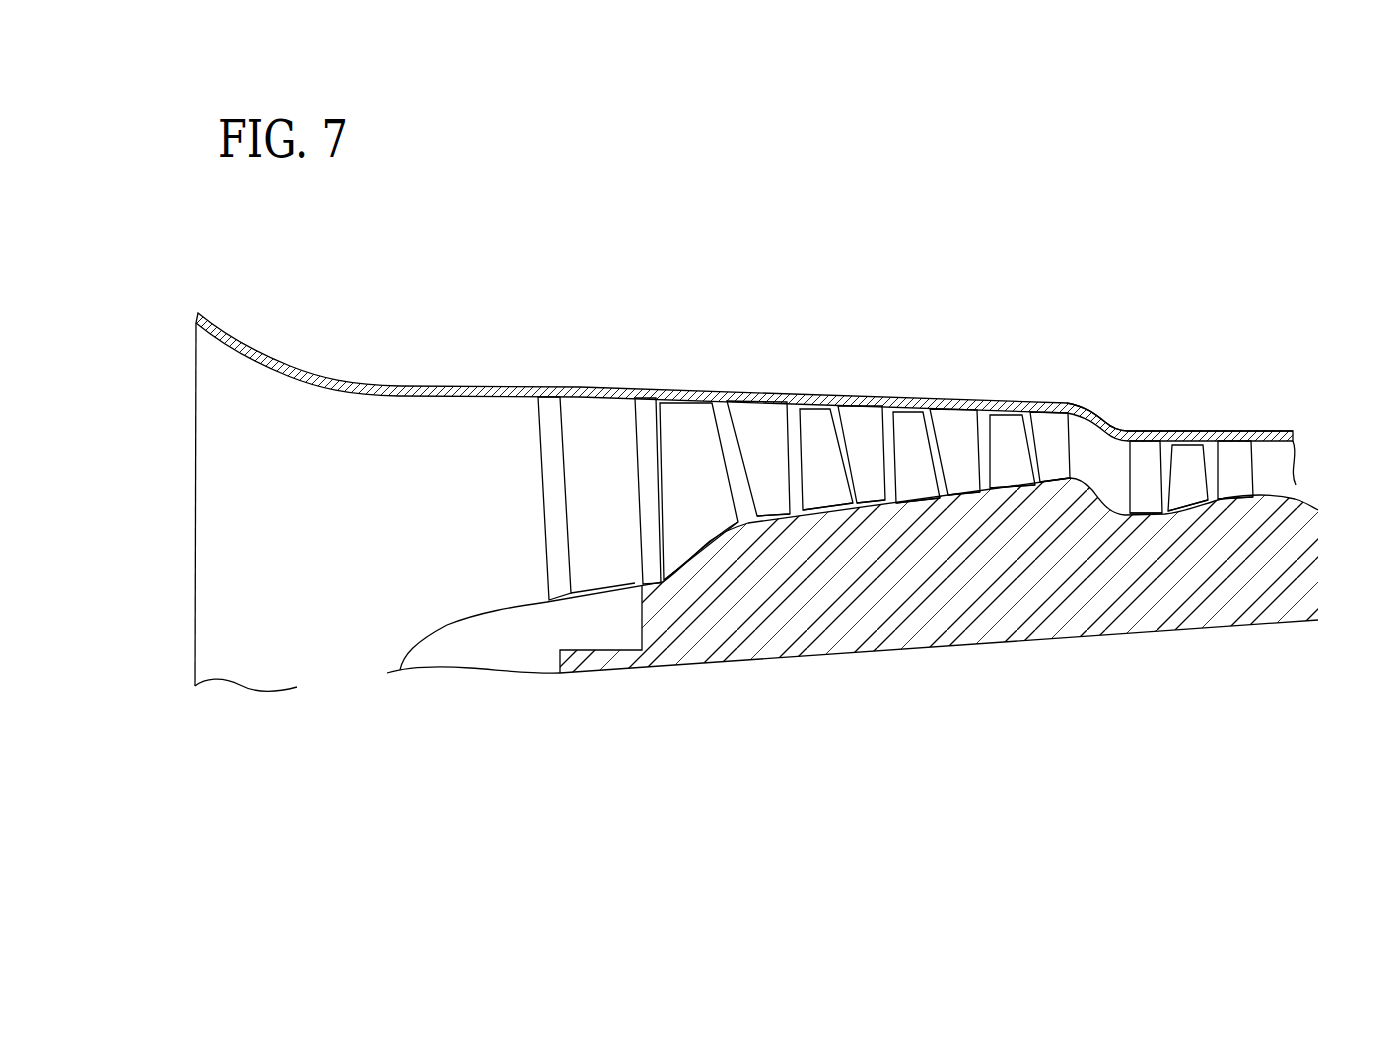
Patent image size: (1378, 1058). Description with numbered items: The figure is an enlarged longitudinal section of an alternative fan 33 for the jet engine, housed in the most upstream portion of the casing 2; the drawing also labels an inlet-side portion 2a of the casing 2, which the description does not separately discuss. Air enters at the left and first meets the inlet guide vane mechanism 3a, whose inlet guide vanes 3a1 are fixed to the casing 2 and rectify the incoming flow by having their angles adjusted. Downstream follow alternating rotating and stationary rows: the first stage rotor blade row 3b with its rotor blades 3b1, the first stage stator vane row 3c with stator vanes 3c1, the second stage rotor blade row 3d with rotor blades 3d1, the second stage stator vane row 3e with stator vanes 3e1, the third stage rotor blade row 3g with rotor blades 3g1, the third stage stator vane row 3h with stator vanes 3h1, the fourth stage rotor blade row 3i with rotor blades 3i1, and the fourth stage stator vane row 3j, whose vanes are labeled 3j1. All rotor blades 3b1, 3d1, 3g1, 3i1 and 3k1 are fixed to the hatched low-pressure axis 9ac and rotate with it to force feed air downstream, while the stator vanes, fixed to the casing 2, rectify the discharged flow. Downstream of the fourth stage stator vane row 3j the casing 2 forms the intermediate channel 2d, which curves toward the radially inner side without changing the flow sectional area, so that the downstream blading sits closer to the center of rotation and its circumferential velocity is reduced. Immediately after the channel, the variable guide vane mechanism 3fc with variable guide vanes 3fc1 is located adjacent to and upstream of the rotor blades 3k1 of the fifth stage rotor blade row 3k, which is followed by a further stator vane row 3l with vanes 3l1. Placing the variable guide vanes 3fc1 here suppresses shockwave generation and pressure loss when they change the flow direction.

The casing 2 is at (455, 387).
The inlet of casing 2a is at (194, 451).
The intermediate channel 2d is at (1092, 462).
The fan 33 is at (1142, 302).
The low-pressure axis 9ac is at (663, 643).
The inlet guide vane mechanism 3a is at (600, 380).
The inlet guide vanes 3a1 is at (603, 567).
The first stage rotor blade row 3b is at (688, 383).
The rotor blades 3b1 is at (702, 533).
The first stage stator vane row 3c is at (757, 385).
The stator vanes 3c1 is at (770, 500).
The second stage rotor blade row 3d is at (812, 387).
The rotor blades 3d1 is at (820, 500).
The second stage stator vane row 3e is at (862, 387).
The stator vanes 3e1 is at (872, 502).
The third stage rotor blade row 3g is at (908, 397).
The rotor blades 3g1 is at (917, 490).
The third stage stator vane row 3h is at (960, 399).
The stator vanes 3h1 is at (962, 475).
The fourth stage rotor blade row 3i is at (1008, 400).
The rotor blades 3i1 is at (1005, 475).
The fourth stage stator vane row 3j is at (1047, 401).
The hub-side end of vane 3j 3j1 is at (1053, 465).
The variable guide vane mechanism 3fc is at (1148, 420).
The variable guide vanes 3fc1 is at (1142, 500).
The fifth stage rotor blade row 3k is at (1192, 420).
The rotor blades 3k1 is at (1187, 490).
The stator vane row 3l is at (1243, 420).
The hub-side end of vane 3l 3l1 is at (1237, 483).